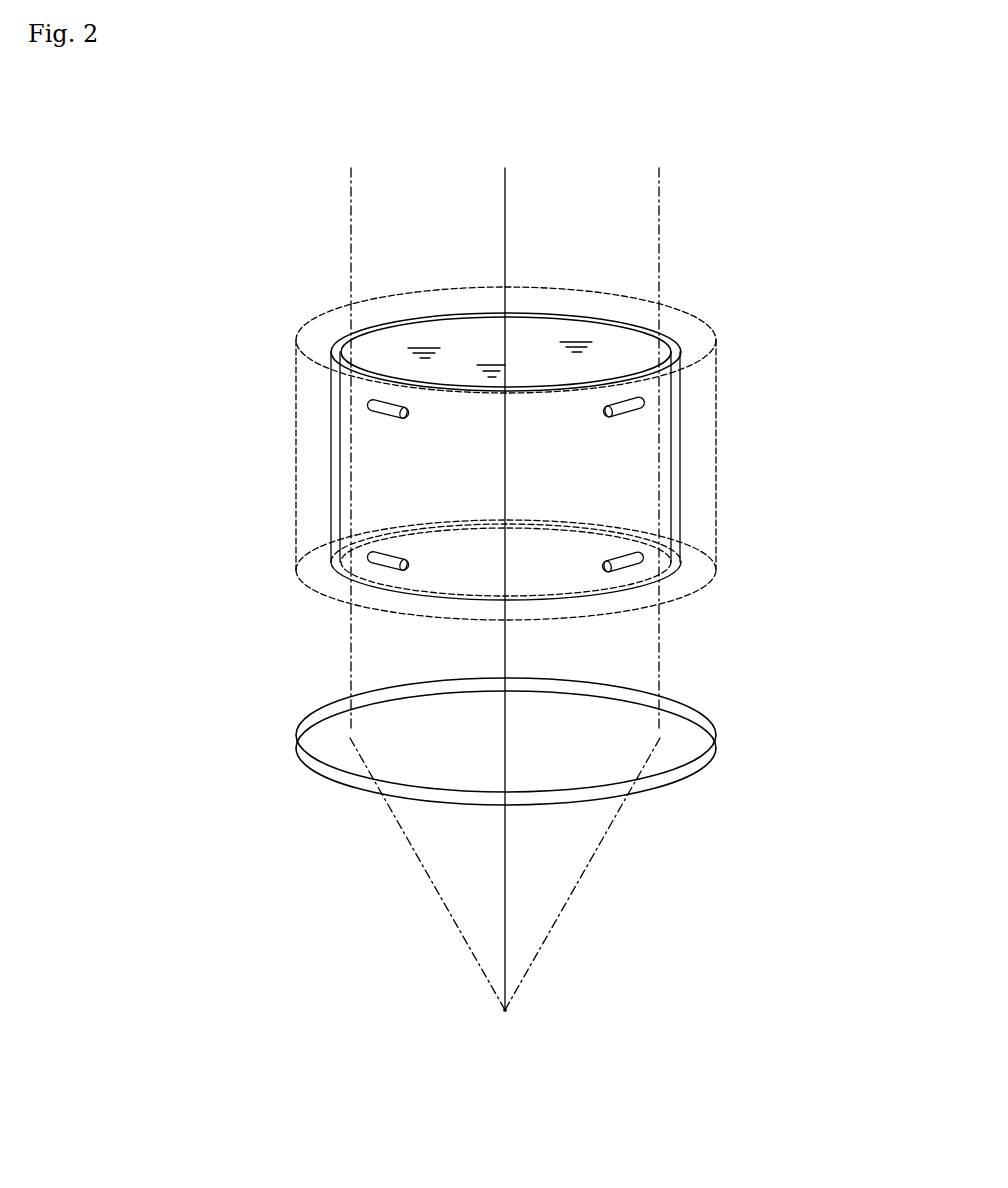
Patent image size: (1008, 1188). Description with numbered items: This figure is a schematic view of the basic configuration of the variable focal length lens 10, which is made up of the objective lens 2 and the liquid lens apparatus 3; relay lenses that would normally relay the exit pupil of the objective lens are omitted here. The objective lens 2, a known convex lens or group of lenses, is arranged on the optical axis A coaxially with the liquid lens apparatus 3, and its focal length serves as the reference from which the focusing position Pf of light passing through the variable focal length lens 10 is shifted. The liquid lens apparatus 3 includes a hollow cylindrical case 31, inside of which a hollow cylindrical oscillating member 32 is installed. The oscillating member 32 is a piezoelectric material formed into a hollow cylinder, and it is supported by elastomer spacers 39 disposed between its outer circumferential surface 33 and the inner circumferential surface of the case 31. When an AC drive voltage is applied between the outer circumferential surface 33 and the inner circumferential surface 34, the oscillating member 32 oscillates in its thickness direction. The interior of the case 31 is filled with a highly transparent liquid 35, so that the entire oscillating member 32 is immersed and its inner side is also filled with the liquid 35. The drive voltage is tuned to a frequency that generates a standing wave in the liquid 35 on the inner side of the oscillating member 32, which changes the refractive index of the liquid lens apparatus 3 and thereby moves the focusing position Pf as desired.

The variable focal length lens 10 is at (805, 222).
The objective lens 2 is at (290, 728).
The liquid lens apparatus 3 is at (290, 332).
The case 31 is at (296, 417).
The oscillating member 32 is at (331, 482).
The outer circumferential surface 33 is at (678, 330).
The inner circumferential surface 34 is at (625, 353).
The liquid 35 is at (572, 340).
The spacers 39 is at (393, 553).
The optical axis A is at (503, 215).
The focusing position Pf is at (505, 1010).